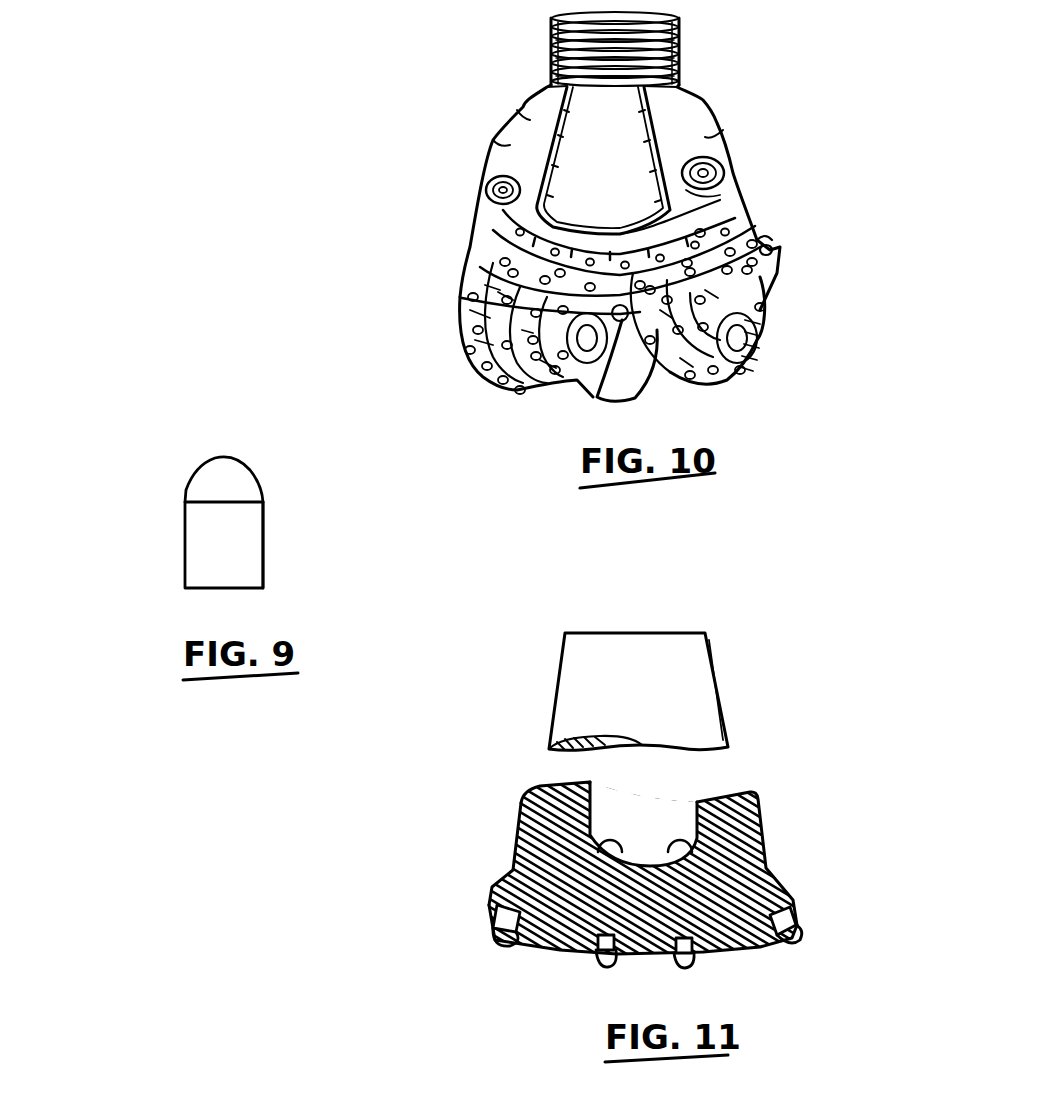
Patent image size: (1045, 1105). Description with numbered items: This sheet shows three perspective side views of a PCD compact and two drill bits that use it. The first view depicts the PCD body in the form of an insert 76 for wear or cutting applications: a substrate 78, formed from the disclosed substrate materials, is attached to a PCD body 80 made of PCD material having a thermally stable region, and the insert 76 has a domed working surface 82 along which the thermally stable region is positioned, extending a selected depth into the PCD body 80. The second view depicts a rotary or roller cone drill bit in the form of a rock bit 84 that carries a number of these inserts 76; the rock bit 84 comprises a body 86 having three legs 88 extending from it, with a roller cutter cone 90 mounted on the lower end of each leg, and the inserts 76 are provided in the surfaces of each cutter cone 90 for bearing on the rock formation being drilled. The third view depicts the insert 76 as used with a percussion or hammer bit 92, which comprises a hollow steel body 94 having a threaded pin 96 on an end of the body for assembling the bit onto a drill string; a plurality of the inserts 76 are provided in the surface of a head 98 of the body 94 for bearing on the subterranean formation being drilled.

In FIG. 9, the insert 76 is at (201, 480).
In FIG. 10, the insert 76 is at (770, 250).
In FIG. 11, the insert 76 is at (779, 940).
In FIG. 9, the substrate 78 is at (276, 545).
In FIG. 9, the PCD body 80 is at (174, 488).
In FIG. 9, the domed working surface 82 is at (207, 460).
In FIG. 10, the rock bit 84 is at (670, 225).
In FIG. 10, the body 86 is at (703, 148).
In FIG. 10, the legs 88 is at (743, 197).
In FIG. 10, the roller cutter cone 90 is at (638, 405).
In FIG. 11, the percussion or hammer bit 92 is at (651, 846).
In FIG. 11, the hollow steel body 94 is at (517, 818).
In FIG. 11, the threaded pin 96 is at (727, 692).
In FIG. 11, the head 98 is at (790, 890).